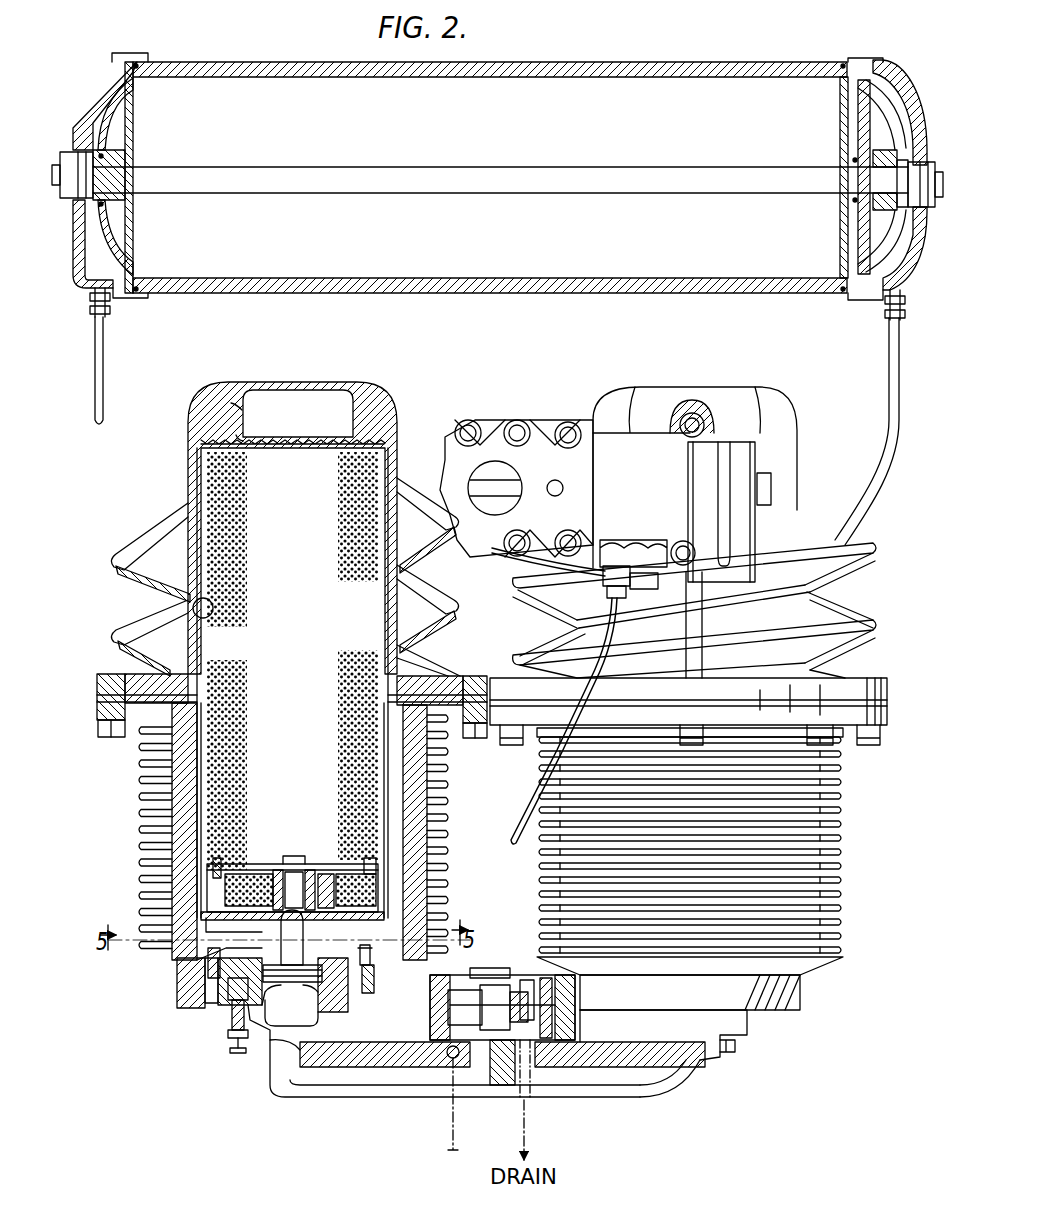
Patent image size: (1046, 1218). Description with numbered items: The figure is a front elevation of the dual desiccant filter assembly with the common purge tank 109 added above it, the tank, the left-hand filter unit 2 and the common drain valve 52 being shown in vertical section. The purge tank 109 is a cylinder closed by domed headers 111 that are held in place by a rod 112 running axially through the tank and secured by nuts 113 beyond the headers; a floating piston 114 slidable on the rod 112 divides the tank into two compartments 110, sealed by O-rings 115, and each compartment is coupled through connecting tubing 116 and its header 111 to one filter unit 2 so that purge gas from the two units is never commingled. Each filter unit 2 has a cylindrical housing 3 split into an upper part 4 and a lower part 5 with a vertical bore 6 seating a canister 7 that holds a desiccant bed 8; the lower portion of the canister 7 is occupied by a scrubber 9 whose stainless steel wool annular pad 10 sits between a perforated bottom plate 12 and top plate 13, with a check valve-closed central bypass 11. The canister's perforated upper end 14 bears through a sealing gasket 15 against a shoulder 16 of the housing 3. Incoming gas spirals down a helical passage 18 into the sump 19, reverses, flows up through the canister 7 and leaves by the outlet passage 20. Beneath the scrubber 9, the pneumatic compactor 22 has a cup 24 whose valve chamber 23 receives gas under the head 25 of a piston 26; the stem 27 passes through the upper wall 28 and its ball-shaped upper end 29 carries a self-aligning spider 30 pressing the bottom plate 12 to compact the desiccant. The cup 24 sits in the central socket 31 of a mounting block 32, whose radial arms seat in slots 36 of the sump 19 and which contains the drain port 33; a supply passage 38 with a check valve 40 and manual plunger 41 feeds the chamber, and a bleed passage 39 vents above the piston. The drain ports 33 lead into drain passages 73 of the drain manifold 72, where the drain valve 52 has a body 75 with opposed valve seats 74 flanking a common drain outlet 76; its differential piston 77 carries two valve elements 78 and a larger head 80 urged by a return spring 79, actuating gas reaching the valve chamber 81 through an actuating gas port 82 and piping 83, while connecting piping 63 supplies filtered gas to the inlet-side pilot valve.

The filter unit 2 is at (395, 392).
The housing 3 is at (183, 462).
The upper part 4 is at (188, 505).
The lower part 5 is at (138, 812).
The bore 6 is at (196, 616).
The canister 7 is at (188, 555).
The desiccant bed 8 is at (292, 661).
The scrubber 9 is at (372, 912).
The annular pad 10 is at (345, 875).
The central bypass 11 is at (276, 895).
The bottom plate 12 is at (283, 961).
The top plate 13 is at (310, 860).
The upper end 14 is at (393, 420).
The sealing gasket 15 is at (388, 440).
The shoulder 16 is at (244, 416).
The helical passage 18 is at (304, 683).
The sump 19 is at (234, 936).
The outlet passage 20 is at (314, 417).
The pneumatic compactor 22 is at (222, 868).
The valve chamber 23 is at (278, 874).
The cup 24 is at (256, 876).
The head 25 is at (240, 948).
The piston 26 is at (350, 960).
The stem 27 is at (300, 1040).
The upper wall 28 is at (351, 890).
The ball-shaped upper end 29 is at (296, 870).
The self-aligning spider 30 is at (330, 876).
The central socket 31 is at (212, 975).
The mounting block 32 is at (198, 962).
The drain port 33 is at (270, 1062).
The slots 36 is at (208, 965).
The supply passage 38 is at (272, 994).
The bleed passage 39 is at (370, 872).
The check valve 40 is at (238, 1005).
The plunger 41 is at (238, 1046).
The common drain valve 52 is at (420, 1020).
The connecting piping 63 is at (488, 578).
The drain manifold 72 is at (590, 1112).
The drain passages 73 is at (342, 1093).
The valve seats 74 is at (528, 982).
The body 75 is at (495, 968).
The common drain outlet 76 is at (530, 1090).
The differential piston 77 is at (455, 990).
The valve elements 78 is at (550, 1020).
The return spring 79 is at (470, 1060).
The larger head 80 is at (448, 1012).
The valve chamber 81 is at (472, 975).
The actuating gas port 82 is at (448, 1060).
The piping 83 is at (518, 800).
The purge tank 109 is at (682, 62).
The compartments 110 is at (112, 224).
The headers 111 is at (96, 72).
The rod 112 is at (556, 166).
The nuts 113 is at (62, 152).
The floating piston 114 is at (858, 124).
The O-rings 115 is at (140, 64).
The connecting tubing 116 is at (103, 364).